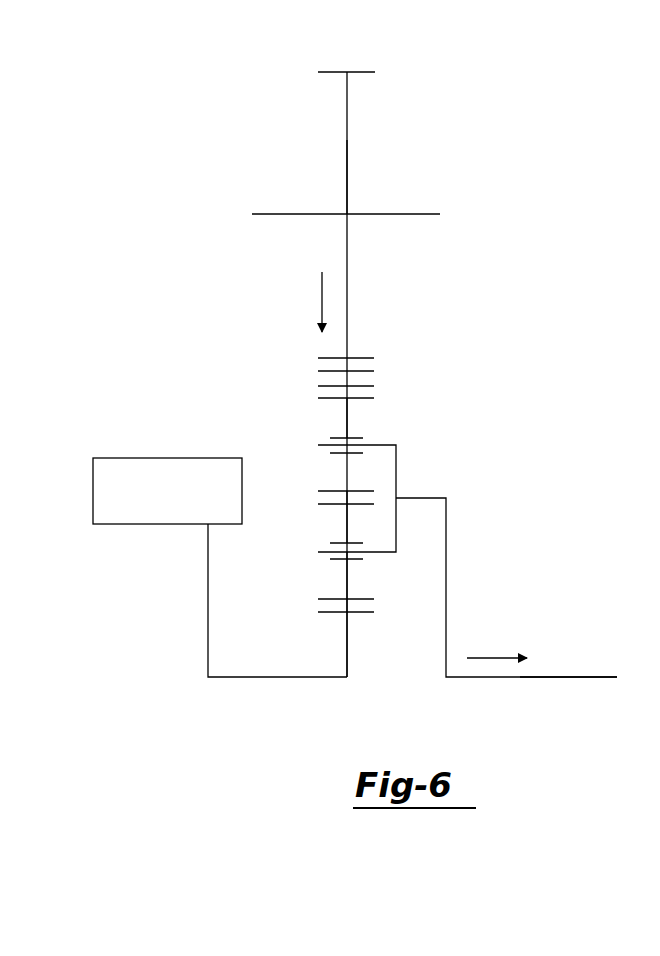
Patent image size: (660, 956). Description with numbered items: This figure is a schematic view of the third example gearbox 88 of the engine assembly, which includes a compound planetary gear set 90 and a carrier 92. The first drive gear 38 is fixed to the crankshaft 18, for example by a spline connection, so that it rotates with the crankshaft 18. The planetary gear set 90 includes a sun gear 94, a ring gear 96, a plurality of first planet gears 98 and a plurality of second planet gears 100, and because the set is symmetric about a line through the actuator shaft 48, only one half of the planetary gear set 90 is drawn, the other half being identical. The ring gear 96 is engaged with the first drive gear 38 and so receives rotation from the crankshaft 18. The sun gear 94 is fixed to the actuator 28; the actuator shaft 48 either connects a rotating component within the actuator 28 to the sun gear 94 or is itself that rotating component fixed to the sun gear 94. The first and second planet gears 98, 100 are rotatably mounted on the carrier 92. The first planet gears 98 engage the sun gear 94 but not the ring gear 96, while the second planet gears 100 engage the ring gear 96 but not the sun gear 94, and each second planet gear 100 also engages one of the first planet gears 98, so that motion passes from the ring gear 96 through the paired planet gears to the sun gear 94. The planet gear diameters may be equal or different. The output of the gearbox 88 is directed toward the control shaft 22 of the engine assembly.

The crankshaft 18 is at (406, 214).
The first drive gear 38 is at (347, 102).
The gearbox 88 is at (175, 270).
The compound planetary gear set 90 is at (283, 291).
The ring gear 96 is at (347, 378).
The second planet gears 100 is at (346, 420).
The carrier 92 is at (396, 458).
The first planet gears 98 is at (347, 527).
The sun gear 94 is at (347, 643).
The actuator 28 is at (143, 458).
The actuator shaft 48 is at (259, 677).
The control shaft 22 is at (589, 676).